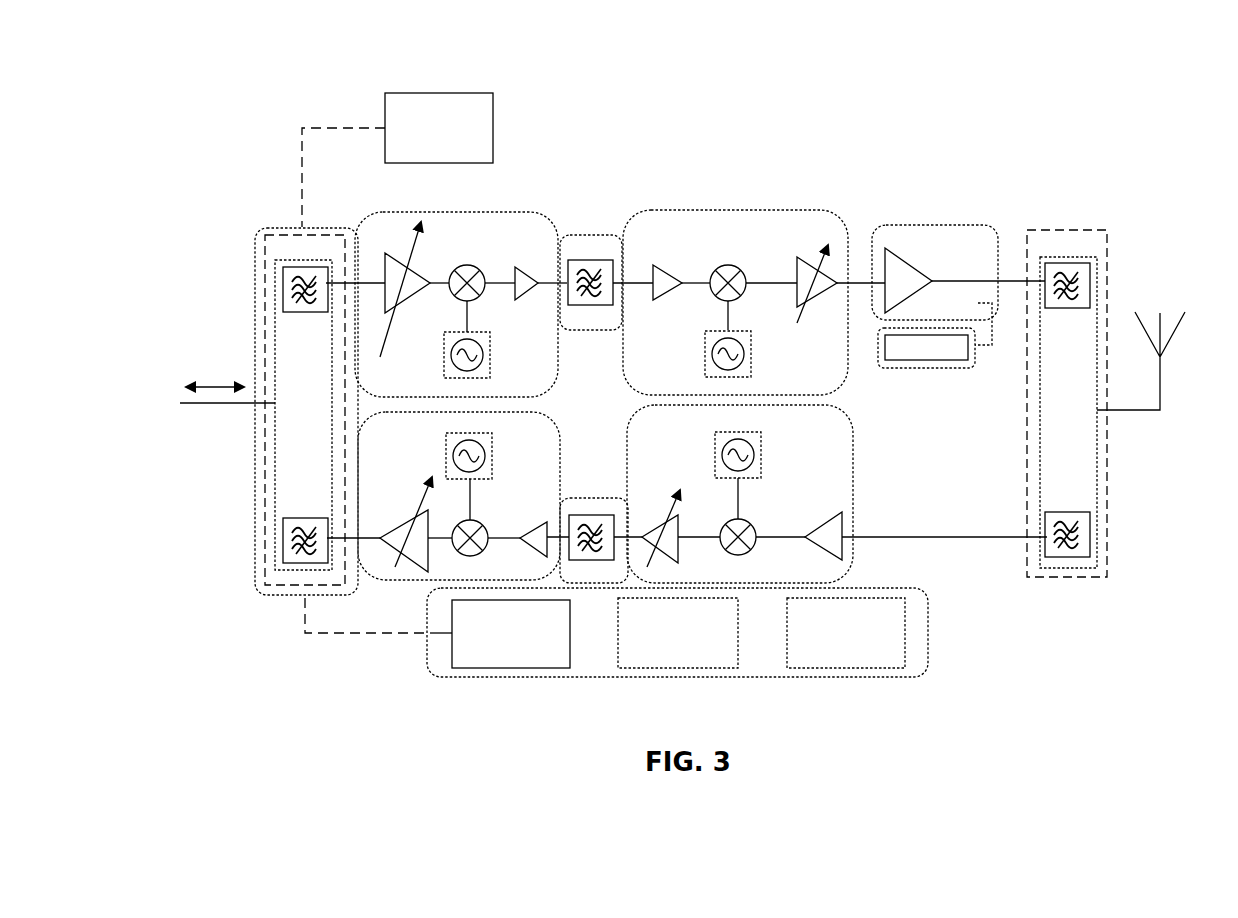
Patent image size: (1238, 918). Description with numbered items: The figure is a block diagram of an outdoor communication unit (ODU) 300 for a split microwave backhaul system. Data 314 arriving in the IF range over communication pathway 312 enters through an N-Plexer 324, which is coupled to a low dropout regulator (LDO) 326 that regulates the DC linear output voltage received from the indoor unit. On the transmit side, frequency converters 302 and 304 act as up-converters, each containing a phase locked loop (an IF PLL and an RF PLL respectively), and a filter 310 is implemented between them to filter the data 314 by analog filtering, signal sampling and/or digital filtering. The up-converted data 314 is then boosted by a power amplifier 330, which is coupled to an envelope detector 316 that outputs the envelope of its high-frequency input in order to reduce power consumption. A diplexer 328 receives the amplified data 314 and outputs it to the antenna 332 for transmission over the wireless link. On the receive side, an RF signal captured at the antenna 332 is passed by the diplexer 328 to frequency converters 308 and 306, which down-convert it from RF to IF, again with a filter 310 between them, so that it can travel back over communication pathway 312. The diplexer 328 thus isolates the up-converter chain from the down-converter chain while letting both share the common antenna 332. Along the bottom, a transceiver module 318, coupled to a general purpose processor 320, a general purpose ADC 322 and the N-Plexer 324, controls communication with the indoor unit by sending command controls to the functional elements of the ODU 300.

The outdoor communication unit (ODU) 300 is at (205, 58).
The frequency converter 302 is at (446, 304).
The frequency converter 304 is at (754, 302).
The frequency converter 306 is at (443, 496).
The frequency converter 308 is at (837, 494).
The filter 310 is at (588, 234).
The communication pathway 312 is at (201, 407).
The data 314 is at (215, 371).
The envelope detector 316 is at (918, 370).
The transceiver module 318 is at (677, 632).
The general purpose processor 320 is at (738, 638).
The general purpose analog-to-digital converter (ADC) 322 is at (905, 638).
The N-Plexer 324 is at (261, 232).
The low dropout regulator (LDO) 326 is at (397, 160).
The diplexer 328 is at (1092, 229).
The power amplifier 330 is at (934, 225).
The antenna 332 is at (1161, 289).